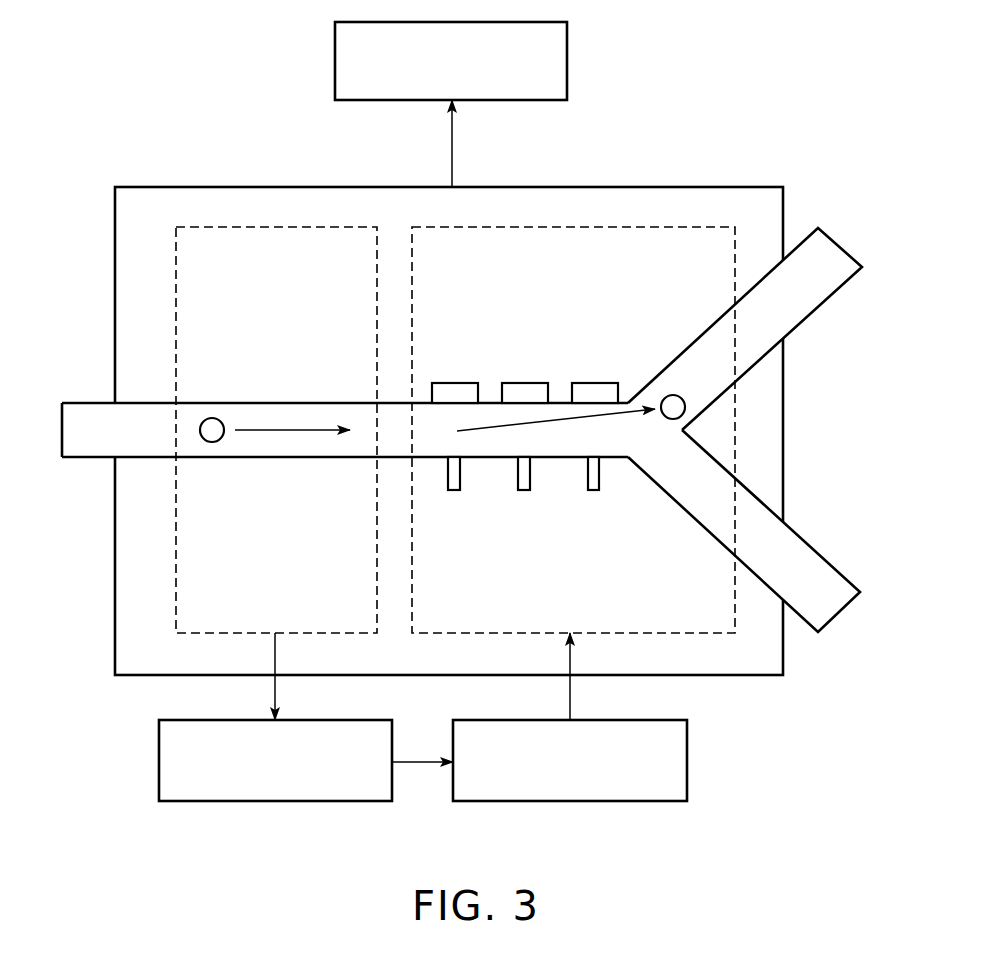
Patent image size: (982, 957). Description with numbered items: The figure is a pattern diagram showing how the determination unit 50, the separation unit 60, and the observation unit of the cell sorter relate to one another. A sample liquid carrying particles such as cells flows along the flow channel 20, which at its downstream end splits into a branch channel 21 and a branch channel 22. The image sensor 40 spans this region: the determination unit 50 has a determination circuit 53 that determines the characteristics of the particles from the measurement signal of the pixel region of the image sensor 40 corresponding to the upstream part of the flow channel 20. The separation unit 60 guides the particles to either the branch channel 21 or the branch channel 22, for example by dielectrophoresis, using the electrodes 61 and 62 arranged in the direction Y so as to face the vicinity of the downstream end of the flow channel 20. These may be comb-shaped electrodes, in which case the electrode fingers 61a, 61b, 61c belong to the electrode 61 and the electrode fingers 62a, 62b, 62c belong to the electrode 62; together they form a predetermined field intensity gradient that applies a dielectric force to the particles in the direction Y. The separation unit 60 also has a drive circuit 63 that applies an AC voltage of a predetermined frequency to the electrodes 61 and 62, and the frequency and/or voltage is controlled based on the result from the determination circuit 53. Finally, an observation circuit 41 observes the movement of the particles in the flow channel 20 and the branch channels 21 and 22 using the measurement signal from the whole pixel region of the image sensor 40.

The flow channel 20 is at (146, 403).
The branch channel 21 is at (811, 232).
The branch channel 22 is at (820, 556).
The image sensor 40 is at (727, 187).
The observation circuit 41 is at (568, 45).
The determination unit 50 is at (215, 226).
The determination circuit 53 is at (360, 802).
The separation unit 60 is at (647, 226).
The electrode 61 is at (531, 349).
The electrode finger 61a is at (464, 382).
The electrode finger 61b is at (534, 382).
The electrode finger 61c is at (597, 369).
The electrode 62 is at (526, 520).
The electrode finger 62a is at (455, 492).
The electrode finger 62b is at (525, 492).
The electrode finger 62c is at (598, 501).
The drive circuit 63 is at (653, 802).